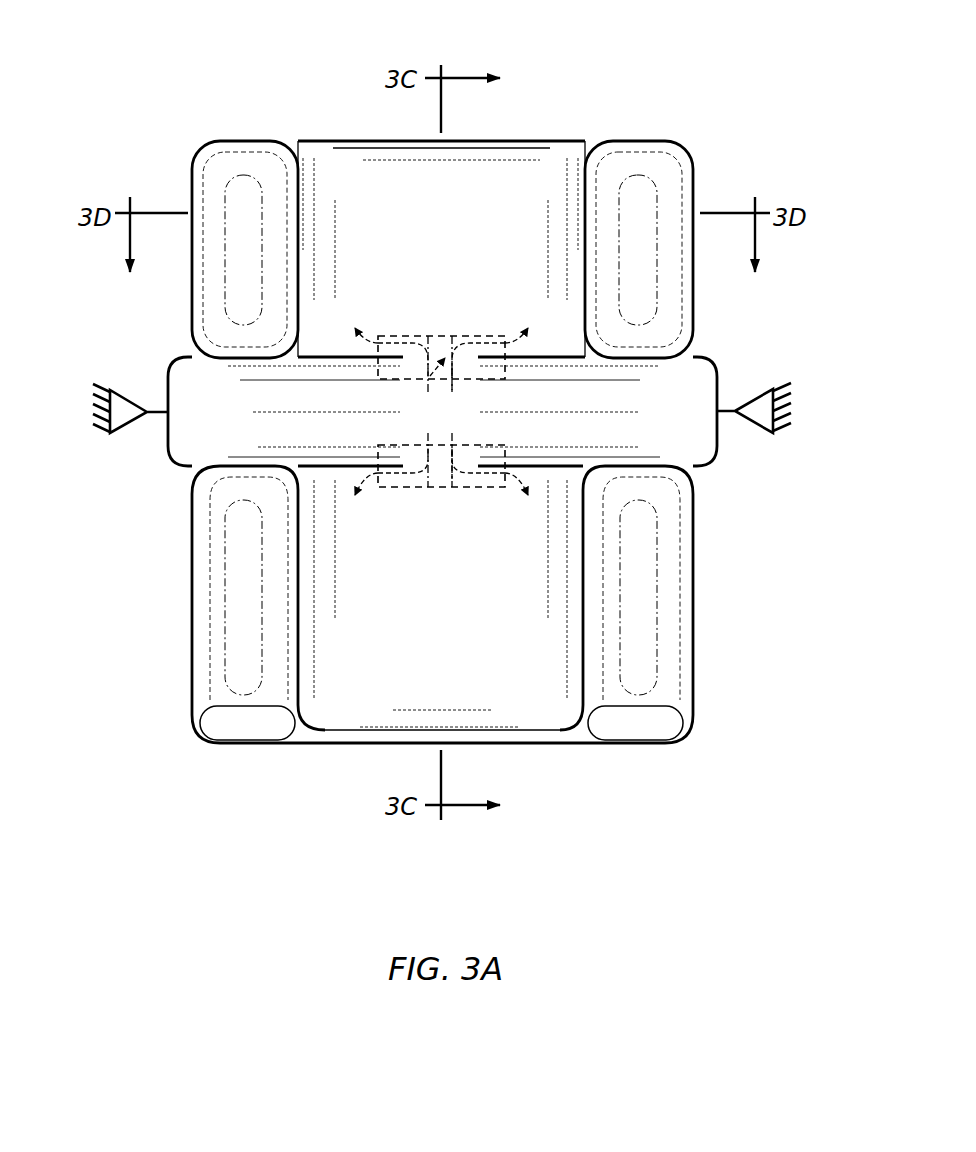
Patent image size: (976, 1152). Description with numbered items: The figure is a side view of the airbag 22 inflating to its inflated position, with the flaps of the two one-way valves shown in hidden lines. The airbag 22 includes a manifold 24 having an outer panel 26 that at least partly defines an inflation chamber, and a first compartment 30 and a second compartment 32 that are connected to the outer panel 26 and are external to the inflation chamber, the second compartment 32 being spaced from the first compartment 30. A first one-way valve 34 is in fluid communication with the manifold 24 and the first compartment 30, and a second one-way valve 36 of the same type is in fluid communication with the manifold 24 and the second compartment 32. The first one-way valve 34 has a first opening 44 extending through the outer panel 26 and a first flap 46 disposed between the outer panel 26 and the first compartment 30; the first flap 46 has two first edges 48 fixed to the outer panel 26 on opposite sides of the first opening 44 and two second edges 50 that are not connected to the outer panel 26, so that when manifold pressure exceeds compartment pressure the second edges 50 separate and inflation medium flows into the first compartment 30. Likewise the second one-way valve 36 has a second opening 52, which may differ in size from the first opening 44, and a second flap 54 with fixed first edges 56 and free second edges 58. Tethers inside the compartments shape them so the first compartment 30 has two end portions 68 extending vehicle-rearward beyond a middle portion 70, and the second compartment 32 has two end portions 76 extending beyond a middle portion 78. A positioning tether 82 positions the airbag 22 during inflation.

The airbag 22 is at (657, 58).
The manifold 24 is at (722, 353).
The outer panel 26 is at (205, 435).
The first compartment 30 is at (285, 113).
The second compartment 32 is at (290, 752).
The first one-way valve 34 is at (473, 302).
The second one-way valve 36 is at (470, 510).
The first opening 44 is at (428, 383).
The first flap 46 is at (434, 328).
The first edges 48 is at (470, 382).
The second edges 50 is at (375, 370).
The second opening 52 is at (440, 462).
The second flap 54 is at (434, 492).
The first edges 56 is at (482, 447).
The second edges 58 is at (378, 456).
The end portions 68 is at (240, 190).
The middle portion 70 is at (512, 177).
The end portions 76 is at (240, 620).
The middle portion 78 is at (490, 633).
The positioning tether 82 is at (160, 408).